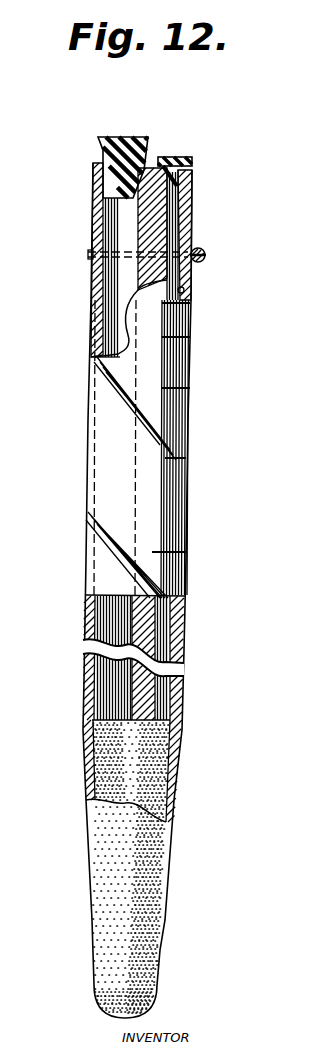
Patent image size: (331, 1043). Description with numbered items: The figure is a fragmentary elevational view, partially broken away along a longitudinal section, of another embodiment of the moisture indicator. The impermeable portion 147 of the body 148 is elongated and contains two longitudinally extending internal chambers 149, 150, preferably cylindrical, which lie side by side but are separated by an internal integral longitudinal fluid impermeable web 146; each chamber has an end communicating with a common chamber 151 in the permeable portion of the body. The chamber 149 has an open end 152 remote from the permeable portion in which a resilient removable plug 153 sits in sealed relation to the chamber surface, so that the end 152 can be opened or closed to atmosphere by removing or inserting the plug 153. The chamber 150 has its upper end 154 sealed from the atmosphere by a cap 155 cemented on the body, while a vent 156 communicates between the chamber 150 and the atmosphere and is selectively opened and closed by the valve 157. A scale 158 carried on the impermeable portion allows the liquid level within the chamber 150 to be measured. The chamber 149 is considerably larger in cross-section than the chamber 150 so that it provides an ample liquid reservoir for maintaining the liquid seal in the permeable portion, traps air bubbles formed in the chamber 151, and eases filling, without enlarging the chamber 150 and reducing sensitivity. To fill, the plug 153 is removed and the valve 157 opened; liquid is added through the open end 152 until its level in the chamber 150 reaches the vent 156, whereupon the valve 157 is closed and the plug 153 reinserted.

The fluid impermeable web 146 is at (138, 248).
The impermeable portion 147 is at (105, 437).
The body 148 is at (192, 436).
The chamber 149 is at (112, 290).
The chamber 150 is at (165, 628).
The common chamber 151 is at (150, 770).
The open end 152 is at (125, 208).
The resilient removable plug 153 is at (123, 137).
The upper end 154 is at (174, 196).
The cap 155 is at (182, 158).
The vent 156 is at (188, 252).
The valve 157 is at (208, 255).
The scale 158 is at (180, 333).